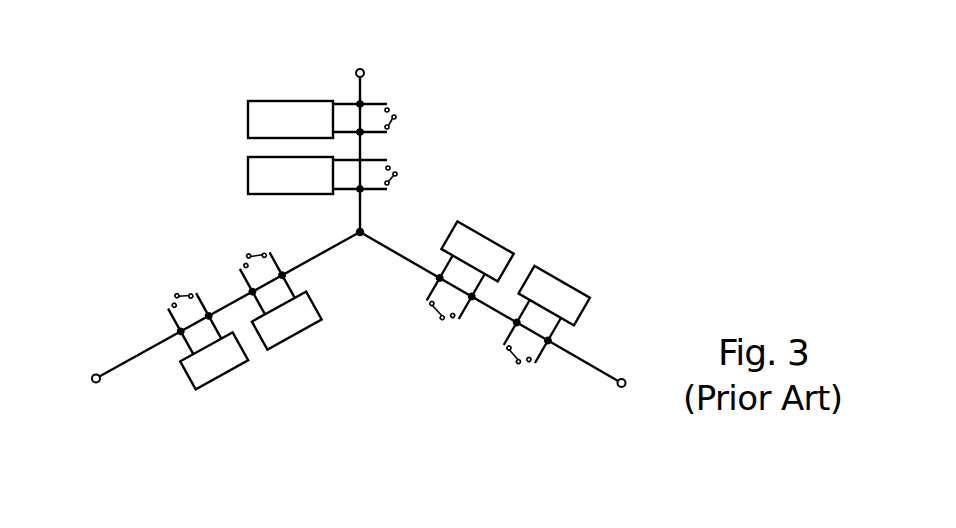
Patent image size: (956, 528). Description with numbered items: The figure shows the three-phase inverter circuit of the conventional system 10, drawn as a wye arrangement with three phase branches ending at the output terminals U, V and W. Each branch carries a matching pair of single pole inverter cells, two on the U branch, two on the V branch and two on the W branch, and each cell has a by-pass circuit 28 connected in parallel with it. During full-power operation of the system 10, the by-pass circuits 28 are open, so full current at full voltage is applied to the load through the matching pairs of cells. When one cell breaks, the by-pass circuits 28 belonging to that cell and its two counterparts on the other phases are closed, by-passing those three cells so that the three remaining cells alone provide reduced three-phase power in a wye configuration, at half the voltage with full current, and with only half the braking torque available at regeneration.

The conventional system 10 is at (367, 238).
The by-pass circuits 28 is at (390, 108).
The U phase terminal U is at (360, 63).
The V phase terminal V is at (622, 397).
The W phase terminal W is at (96, 390).